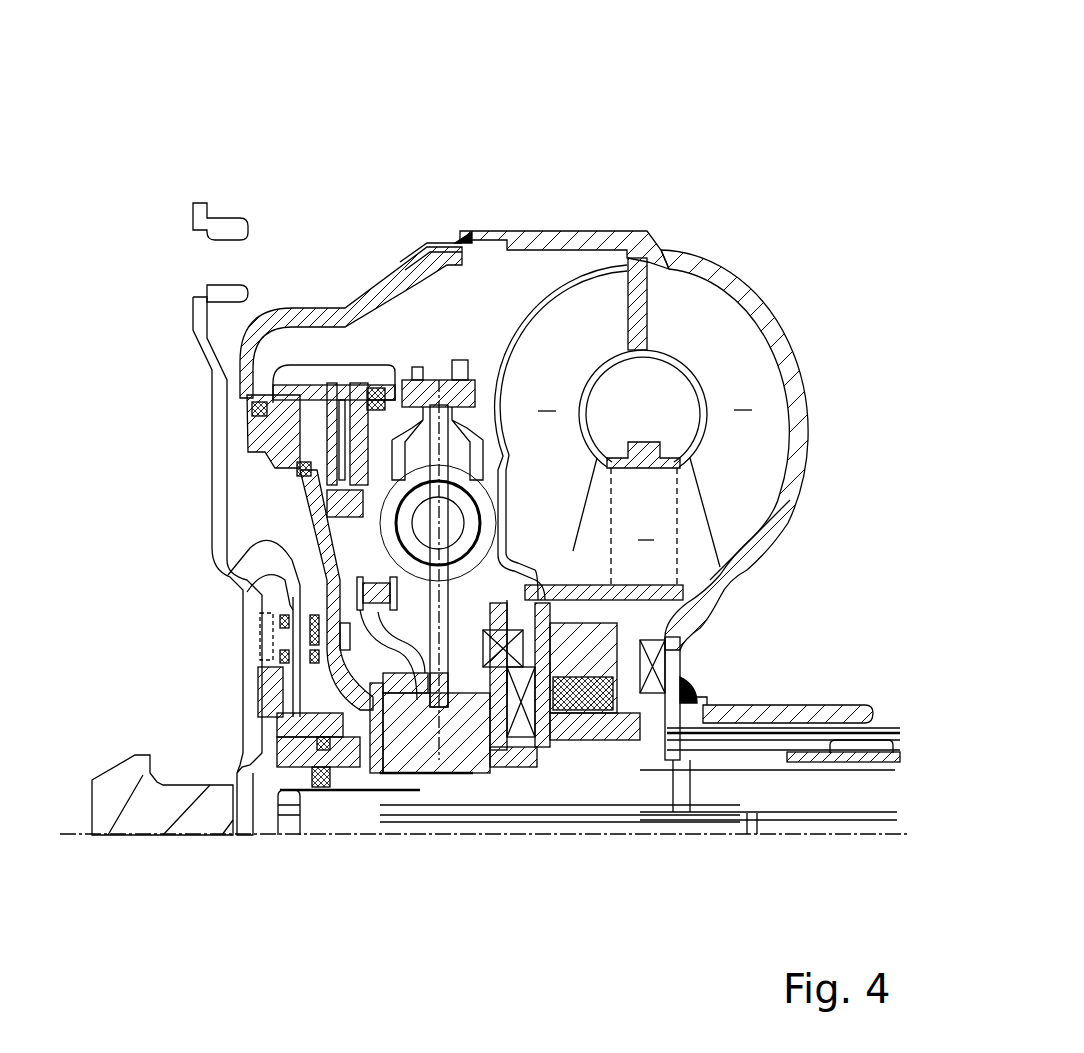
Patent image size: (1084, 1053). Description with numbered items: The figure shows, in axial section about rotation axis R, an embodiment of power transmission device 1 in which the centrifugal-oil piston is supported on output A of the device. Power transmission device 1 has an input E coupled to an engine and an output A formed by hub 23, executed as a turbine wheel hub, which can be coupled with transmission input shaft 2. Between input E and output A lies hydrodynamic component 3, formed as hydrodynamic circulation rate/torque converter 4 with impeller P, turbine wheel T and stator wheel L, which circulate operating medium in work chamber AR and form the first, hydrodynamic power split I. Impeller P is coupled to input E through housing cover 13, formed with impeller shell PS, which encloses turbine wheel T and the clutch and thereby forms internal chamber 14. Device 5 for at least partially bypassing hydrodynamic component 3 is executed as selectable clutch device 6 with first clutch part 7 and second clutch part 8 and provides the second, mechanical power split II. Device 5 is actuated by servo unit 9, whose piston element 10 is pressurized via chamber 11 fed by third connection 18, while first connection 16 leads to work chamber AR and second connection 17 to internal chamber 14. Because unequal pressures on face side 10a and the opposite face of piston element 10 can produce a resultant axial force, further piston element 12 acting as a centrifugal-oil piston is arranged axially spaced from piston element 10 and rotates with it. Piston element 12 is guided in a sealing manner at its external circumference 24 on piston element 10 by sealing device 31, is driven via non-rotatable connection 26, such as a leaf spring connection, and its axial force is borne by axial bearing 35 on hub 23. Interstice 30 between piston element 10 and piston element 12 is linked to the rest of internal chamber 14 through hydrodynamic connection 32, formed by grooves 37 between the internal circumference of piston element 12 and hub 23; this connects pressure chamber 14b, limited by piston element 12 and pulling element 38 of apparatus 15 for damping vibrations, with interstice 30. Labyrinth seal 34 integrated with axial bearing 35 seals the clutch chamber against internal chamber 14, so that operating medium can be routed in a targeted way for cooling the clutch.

The power transmission device 1 is at (728, 118).
The transmission input shaft 2 is at (770, 795).
The output A is at (775, 793).
The hydrodynamic component 3 is at (776, 429).
The hydrodynamic circulation rate/torque converter 4 is at (806, 283).
The device for at least partially bypassing the hydrodynamic component 5 is at (345, 368).
The selectable clutch device 6 is at (333, 366).
The first clutch part 7 is at (387, 373).
The second clutch part 8 is at (345, 522).
The servo unit 9 is at (273, 447).
The piston element 10 is at (287, 563).
The face side of piston element 10a is at (307, 597).
The chamber pressurizable with hydraulic medium 11 is at (287, 670).
The further piston element (centrifugal-oil piston) 12 is at (340, 680).
The housing cover 13 is at (428, 237).
The internal chamber 14 is at (533, 300).
The pressure chamber 14b is at (367, 663).
The apparatus for damping vibrations 15 is at (433, 473).
The first connection 16 is at (667, 640).
The second connection 17 is at (353, 770).
The third connection 18 is at (283, 747).
The hub 23 is at (468, 767).
The external circumference 24 is at (305, 470).
The non-rotatable connection 26 is at (313, 630).
The interstice 30 is at (283, 520).
The sealing device 31 is at (300, 468).
The hydrodynamic connection 32 is at (294, 825).
The labyrinth seal 34 is at (382, 763).
The axial bearing 35 is at (408, 844).
The groove 37 is at (343, 757).
The pulling element (driving dog) 38 is at (418, 767).
The input E is at (207, 410).
The first power split (hydrodynamic split) I is at (727, 259).
The second power split (mechanical split) II is at (260, 403).
The impeller shell PS is at (603, 232).
The work chamber AR is at (713, 440).
The impeller P is at (665, 362).
The turbine wheel T is at (547, 398).
The stator wheel L is at (646, 521).
The rotation axis R is at (905, 836).